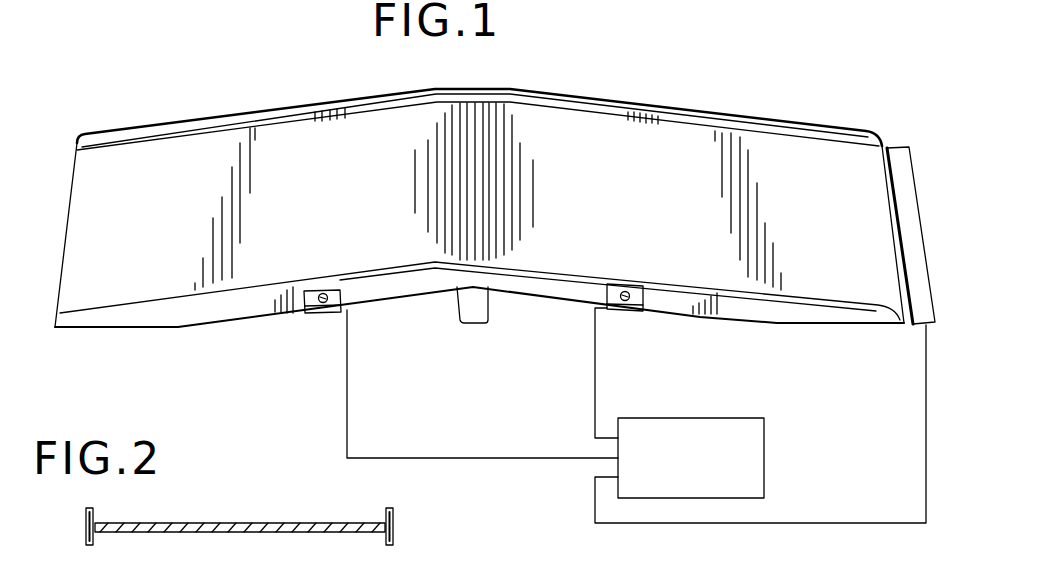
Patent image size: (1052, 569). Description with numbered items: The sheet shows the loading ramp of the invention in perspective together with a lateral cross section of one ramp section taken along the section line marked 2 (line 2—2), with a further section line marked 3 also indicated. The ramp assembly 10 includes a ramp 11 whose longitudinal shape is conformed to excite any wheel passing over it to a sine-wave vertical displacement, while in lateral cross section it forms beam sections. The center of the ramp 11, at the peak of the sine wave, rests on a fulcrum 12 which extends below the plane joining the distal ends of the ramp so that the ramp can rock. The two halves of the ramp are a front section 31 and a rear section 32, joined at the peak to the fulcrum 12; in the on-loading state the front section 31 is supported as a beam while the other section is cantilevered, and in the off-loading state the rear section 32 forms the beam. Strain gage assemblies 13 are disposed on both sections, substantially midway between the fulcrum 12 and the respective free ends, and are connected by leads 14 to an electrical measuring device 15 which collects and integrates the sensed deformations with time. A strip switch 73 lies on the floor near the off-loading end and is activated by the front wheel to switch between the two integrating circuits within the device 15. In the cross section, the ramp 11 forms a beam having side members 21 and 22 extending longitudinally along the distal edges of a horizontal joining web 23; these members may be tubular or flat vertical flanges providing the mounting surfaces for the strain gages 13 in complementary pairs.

In FIG. 1, the section line 2- 2 is at (280, 92).
In FIG. 1, the section line 3- 3 is at (77, 223).
In FIG. 1, the ramp assembly 10 is at (479, 173).
In FIG. 1, the ramp 11 is at (672, 108).
In FIG. 1, the fulcrum 12 is at (478, 317).
In FIG. 1, the strain gage assemblies 13 is at (322, 314).
In FIG. 1, the leads 14 is at (350, 365).
In FIG. 1, the electrical measuring device 15 is at (727, 418).
In FIG. 1, the front section 31 is at (287, 228).
In FIG. 1, the rear section 32 is at (700, 216).
In FIG. 1, the strip switch 73 is at (910, 265).
In FIG. 2, the side member 21 is at (86, 533).
In FIG. 2, the side member 22 is at (393, 518).
In FIG. 2, the horizontal joining web 23 is at (258, 523).